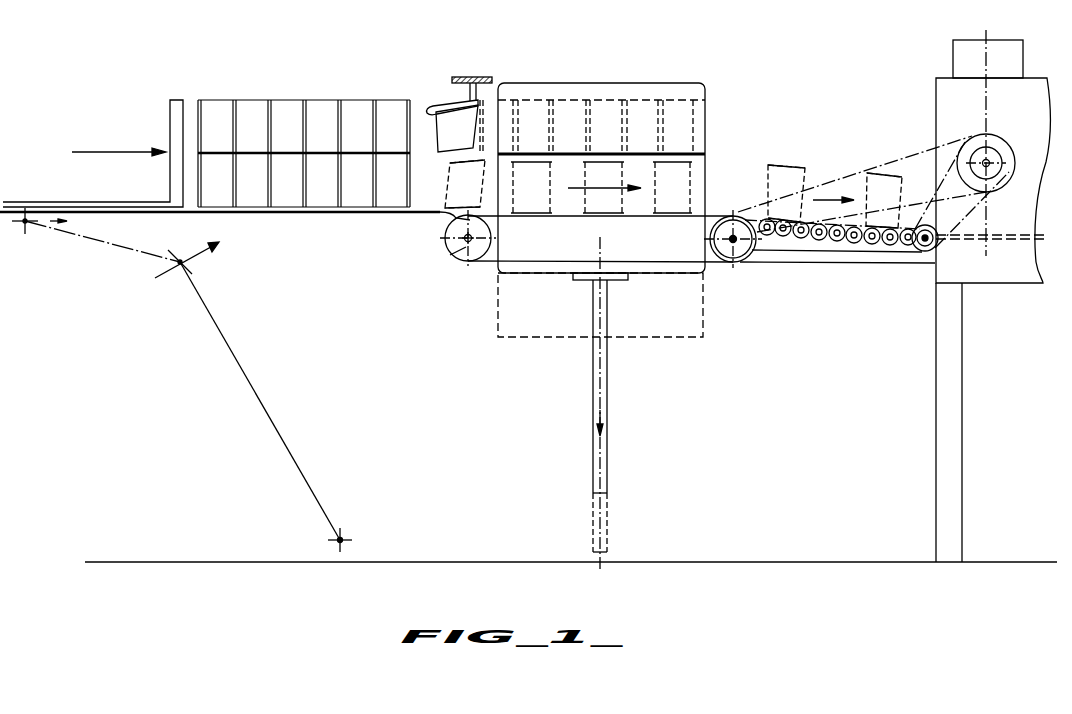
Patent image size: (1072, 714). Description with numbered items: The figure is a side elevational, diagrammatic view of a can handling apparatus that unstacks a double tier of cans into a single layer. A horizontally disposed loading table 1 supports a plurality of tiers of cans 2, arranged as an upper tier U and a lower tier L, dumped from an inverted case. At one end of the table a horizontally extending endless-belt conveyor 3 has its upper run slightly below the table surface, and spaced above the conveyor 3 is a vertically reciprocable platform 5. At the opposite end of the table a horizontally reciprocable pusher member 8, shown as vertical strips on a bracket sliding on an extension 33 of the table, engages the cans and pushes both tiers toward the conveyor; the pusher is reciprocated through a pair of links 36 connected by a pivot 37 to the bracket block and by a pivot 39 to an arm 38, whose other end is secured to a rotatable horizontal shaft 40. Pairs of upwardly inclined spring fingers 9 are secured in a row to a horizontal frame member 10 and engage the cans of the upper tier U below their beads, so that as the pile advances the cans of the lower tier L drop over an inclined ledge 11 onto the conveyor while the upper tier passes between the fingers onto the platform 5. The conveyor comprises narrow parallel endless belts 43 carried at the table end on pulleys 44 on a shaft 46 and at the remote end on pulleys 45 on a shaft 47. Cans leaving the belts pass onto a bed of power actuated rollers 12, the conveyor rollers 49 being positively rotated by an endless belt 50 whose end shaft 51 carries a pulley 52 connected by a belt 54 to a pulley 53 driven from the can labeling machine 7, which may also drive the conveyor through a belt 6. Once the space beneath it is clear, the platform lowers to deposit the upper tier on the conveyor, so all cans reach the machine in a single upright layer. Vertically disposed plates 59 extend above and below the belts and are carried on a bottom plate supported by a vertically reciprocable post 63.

The loading table 1 is at (354, 212).
The cans 2 is at (451, 164).
The conveyor 3 is at (628, 218).
The platform 5 is at (700, 154).
The belt 6 is at (914, 156).
The can labeling machine 7 is at (934, 97).
The pusher member 8 is at (170, 121).
The spring fingers 9 is at (433, 106).
The horizontal frame member 10 is at (472, 78).
The inclined ledge 11 is at (448, 222).
The power actuated rollers 12 is at (815, 238).
The extension 33 is at (98, 214).
The links 36 is at (125, 249).
The pivot 37 is at (23, 226).
The arm 38 is at (256, 400).
The pivot 39 is at (179, 268).
The horizontal shaft 40 is at (348, 536).
The endless belts 43 is at (483, 262).
The pulley 44 is at (464, 252).
The pulley 45 is at (730, 262).
The shaft 46 is at (463, 242).
The shaft 47 is at (734, 234).
The conveyor rollers 49 is at (880, 244).
The endless belt 50 is at (836, 245).
The end shaft 51 is at (923, 242).
The pulley 52 is at (930, 258).
The pulley 53 is at (998, 150).
The belt 54 is at (968, 214).
The vertically disposed plates 59 is at (684, 94).
The vertically reciprocable post 63 is at (608, 398).
The upper tier U is at (310, 104).
The lower tier L is at (290, 200).